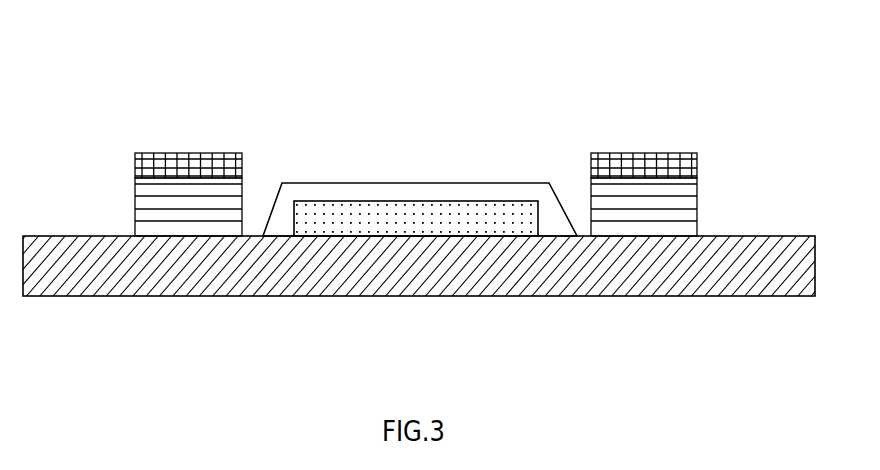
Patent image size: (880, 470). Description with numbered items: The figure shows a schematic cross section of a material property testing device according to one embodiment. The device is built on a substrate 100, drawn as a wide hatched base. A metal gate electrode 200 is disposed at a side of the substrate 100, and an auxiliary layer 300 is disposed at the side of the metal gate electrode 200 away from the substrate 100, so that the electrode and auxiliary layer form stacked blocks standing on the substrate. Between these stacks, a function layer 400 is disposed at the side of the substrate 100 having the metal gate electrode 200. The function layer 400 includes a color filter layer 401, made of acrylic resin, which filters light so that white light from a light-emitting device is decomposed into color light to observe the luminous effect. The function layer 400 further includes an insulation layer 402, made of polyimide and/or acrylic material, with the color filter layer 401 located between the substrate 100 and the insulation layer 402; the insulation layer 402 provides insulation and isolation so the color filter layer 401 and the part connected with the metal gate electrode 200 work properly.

The substrate 100 is at (295, 267).
The metal gate electrode 200 is at (177, 213).
The auxiliary layer 300 is at (152, 168).
The function layer 400 is at (420, 135).
The color filter layer 401 is at (449, 95).
The insulation layer 402 is at (407, 190).